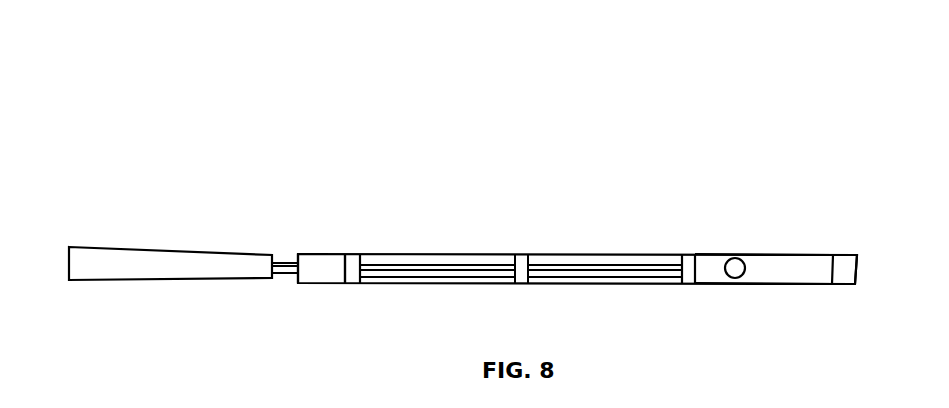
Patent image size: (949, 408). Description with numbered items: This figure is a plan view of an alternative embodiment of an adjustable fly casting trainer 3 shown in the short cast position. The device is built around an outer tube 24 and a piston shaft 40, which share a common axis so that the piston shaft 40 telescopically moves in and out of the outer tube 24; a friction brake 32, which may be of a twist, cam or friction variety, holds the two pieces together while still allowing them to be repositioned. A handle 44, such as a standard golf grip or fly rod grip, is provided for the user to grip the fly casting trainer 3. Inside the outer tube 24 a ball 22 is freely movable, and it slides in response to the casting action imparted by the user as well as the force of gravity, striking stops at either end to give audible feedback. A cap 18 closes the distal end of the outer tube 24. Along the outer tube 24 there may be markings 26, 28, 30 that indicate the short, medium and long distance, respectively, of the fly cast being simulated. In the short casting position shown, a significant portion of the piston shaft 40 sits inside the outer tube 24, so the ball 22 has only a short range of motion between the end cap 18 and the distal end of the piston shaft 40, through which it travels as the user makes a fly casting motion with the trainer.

The adjustable fly casting trainer 3 is at (469, 115).
The cap 18 is at (862, 262).
The ball 22 is at (738, 290).
The outer tube 24 is at (803, 250).
The marking 26 is at (685, 252).
The marking 28 is at (518, 250).
The marking 30 is at (355, 250).
The friction brake 32 is at (322, 246).
The piston shaft 40 is at (282, 258).
The handle 44 is at (101, 241).